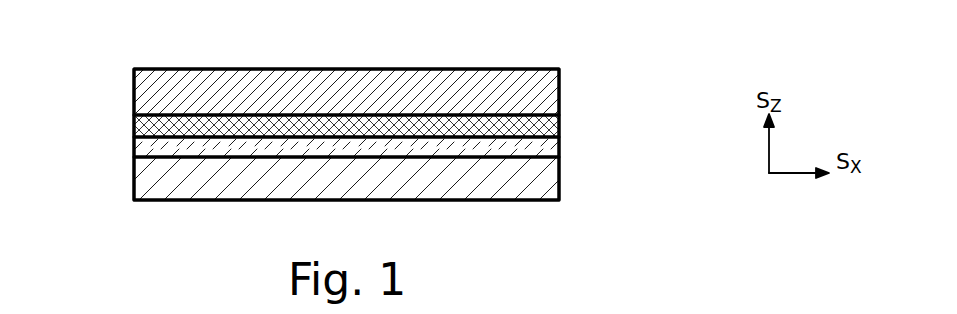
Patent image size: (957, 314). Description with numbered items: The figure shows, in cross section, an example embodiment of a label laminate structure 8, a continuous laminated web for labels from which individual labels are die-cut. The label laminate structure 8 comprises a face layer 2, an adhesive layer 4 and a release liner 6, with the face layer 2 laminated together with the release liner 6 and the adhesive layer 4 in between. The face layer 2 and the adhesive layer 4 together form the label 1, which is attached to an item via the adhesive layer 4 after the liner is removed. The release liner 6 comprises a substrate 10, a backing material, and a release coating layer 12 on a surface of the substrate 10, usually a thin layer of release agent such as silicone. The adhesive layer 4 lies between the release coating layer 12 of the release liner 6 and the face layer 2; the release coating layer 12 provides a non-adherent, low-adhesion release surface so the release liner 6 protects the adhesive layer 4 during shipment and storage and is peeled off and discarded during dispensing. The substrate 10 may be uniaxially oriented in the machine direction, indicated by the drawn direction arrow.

The label 1 is at (340, 99).
The face layer 2 is at (559, 97).
The adhesive layer 4 is at (559, 125).
The release liner 6 is at (346, 177).
The label laminate structure 8 is at (346, 112).
The substrate 10 is at (559, 178).
The release coating layer 12 is at (559, 143).